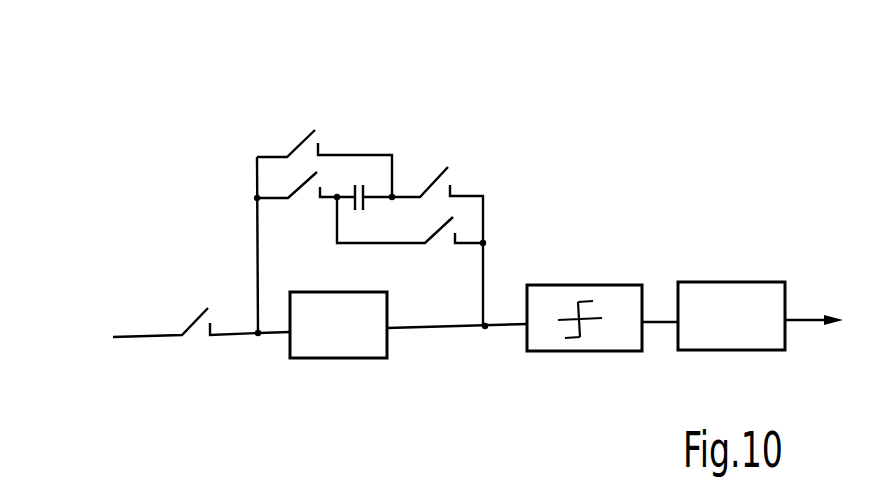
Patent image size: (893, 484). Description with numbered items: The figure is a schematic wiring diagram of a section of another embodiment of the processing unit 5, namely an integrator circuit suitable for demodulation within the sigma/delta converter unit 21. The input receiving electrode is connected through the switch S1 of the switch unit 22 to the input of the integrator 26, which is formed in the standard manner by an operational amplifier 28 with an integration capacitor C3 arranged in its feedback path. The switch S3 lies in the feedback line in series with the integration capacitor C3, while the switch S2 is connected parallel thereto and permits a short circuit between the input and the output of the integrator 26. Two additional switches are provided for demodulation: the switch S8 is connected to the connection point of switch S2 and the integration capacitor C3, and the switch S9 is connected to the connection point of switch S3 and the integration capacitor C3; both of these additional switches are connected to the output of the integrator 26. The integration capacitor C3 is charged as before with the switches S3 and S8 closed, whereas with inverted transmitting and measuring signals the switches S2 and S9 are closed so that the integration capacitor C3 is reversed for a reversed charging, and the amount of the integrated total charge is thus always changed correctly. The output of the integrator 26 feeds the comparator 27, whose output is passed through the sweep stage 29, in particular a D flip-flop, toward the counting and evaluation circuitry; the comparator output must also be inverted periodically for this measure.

The processing unit 5 is at (122, 118).
The sigma/delta converter unit 21 is at (170, 230).
The switch unit 22 is at (337, 174).
The integrator 26 is at (250, 227).
The comparator 27 is at (603, 340).
The operational amplifier 28 is at (380, 345).
The sweep stage 29 is at (737, 337).
The switch S1 is at (195, 312).
The switch S2 is at (300, 140).
The switch S3 is at (312, 177).
The additional switch S8 is at (433, 173).
The additional switch S9 is at (448, 222).
The integration capacitor C3 is at (364, 183).